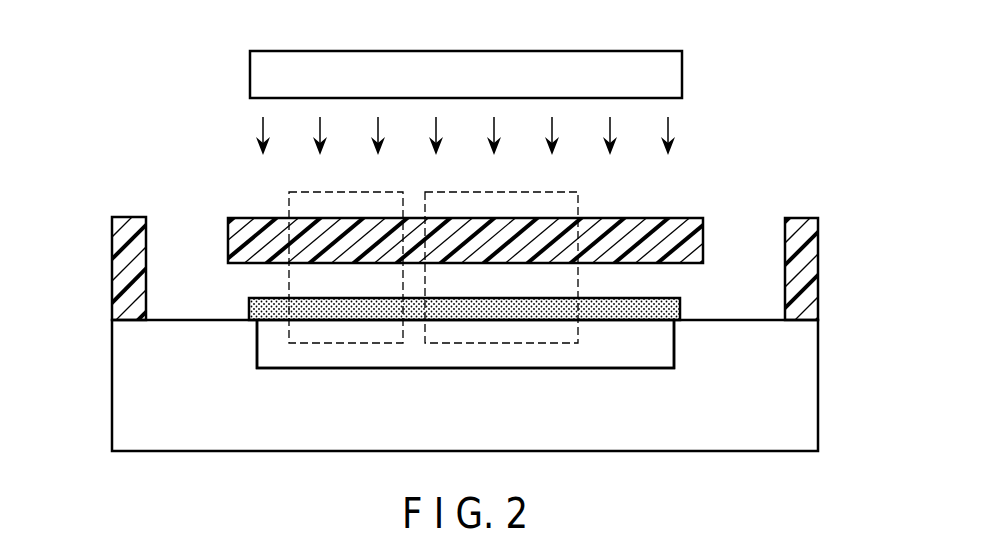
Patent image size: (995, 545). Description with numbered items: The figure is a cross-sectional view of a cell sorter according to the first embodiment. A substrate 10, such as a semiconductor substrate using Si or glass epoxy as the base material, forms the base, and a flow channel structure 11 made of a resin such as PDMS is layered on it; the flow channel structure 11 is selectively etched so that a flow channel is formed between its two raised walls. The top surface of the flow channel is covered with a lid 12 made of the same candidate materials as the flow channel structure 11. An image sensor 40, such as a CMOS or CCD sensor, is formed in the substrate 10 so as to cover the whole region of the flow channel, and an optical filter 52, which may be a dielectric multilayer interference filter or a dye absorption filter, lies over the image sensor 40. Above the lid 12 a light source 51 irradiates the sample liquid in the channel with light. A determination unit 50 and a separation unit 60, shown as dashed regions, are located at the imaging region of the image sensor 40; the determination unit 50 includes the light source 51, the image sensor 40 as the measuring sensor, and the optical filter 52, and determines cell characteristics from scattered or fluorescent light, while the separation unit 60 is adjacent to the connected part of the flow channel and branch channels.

The substrate 10 is at (727, 452).
The flow channel structure 11 is at (800, 218).
The lid 12 is at (703, 230).
The image sensor 40 is at (612, 369).
The determination unit 50 is at (289, 203).
The light source 51 is at (638, 51).
The optical filter 52 is at (249, 305).
The separation unit 60 is at (578, 203).